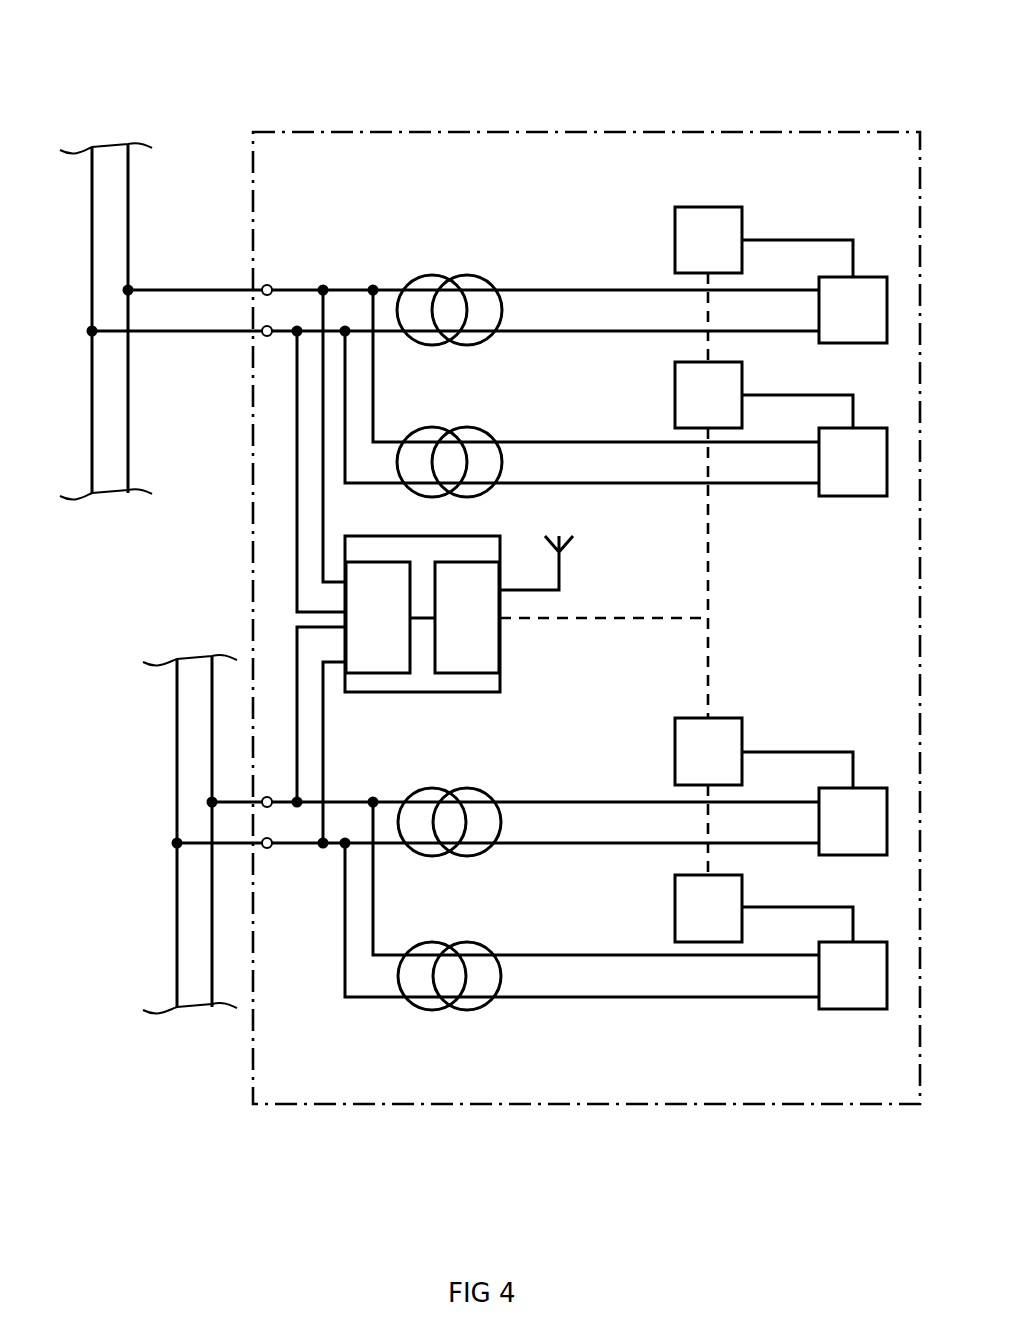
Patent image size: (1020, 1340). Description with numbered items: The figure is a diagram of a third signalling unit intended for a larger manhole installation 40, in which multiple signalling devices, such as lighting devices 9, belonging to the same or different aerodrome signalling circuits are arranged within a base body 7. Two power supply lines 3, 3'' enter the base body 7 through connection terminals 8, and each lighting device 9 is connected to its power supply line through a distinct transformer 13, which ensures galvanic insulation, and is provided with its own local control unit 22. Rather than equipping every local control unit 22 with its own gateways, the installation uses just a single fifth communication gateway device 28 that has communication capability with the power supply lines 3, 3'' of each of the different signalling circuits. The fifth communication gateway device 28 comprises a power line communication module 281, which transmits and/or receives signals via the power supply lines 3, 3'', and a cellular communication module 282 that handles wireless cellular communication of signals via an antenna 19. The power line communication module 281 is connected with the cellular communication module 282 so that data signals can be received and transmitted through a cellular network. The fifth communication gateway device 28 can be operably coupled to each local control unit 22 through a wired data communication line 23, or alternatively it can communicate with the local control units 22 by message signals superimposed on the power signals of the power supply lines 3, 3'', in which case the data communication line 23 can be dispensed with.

The manhole installation 40 is at (396, 88).
The power supply line 3 is at (141, 321).
The power supply line 3'' is at (138, 834).
The base body 7 is at (527, 1104).
The connection terminals 8 is at (267, 283).
The transformer 13 is at (430, 276).
The local control unit 22 is at (742, 228).
The lighting device 9 is at (887, 308).
The data communication line 23 is at (708, 550).
The fifth communication gateway device 28 is at (487, 692).
The power line communication module 281 is at (371, 673).
The cellular communication module 282 is at (500, 648).
The antenna 19 is at (562, 578).